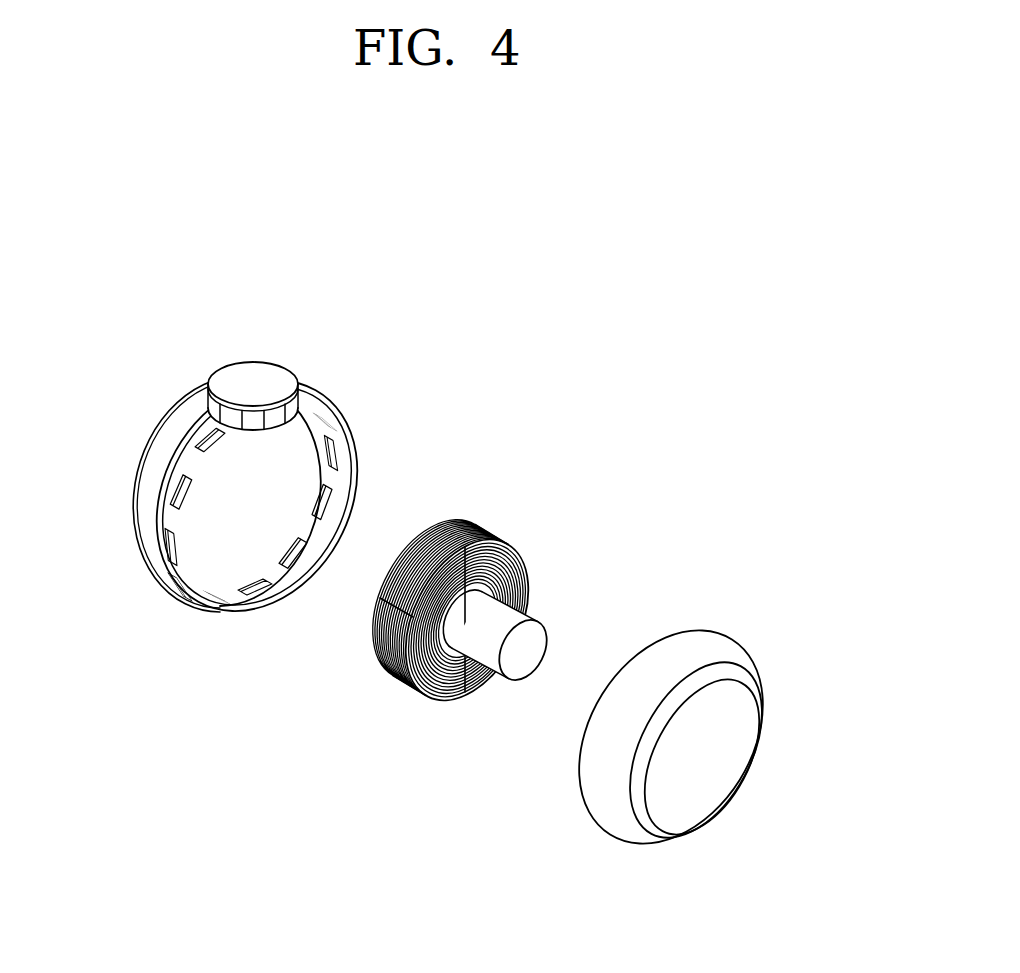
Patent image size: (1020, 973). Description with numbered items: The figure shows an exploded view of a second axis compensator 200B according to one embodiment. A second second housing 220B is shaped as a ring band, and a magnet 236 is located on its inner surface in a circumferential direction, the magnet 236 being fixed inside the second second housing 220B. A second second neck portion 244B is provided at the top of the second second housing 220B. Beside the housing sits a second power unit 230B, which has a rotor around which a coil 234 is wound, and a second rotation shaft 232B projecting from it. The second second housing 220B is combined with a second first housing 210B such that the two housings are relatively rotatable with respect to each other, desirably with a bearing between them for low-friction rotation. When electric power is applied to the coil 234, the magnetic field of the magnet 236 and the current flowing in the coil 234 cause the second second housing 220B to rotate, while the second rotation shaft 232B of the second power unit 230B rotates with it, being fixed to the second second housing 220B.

The second axis compensator 200B is at (626, 375).
The second first housing 210B is at (695, 643).
The second second housing 220B is at (170, 432).
The second power unit 230B is at (500, 516).
The second rotation shaft 232B is at (515, 673).
The coil 234 is at (443, 693).
The magnet 236 is at (252, 587).
The second second neck portion 244B is at (263, 372).